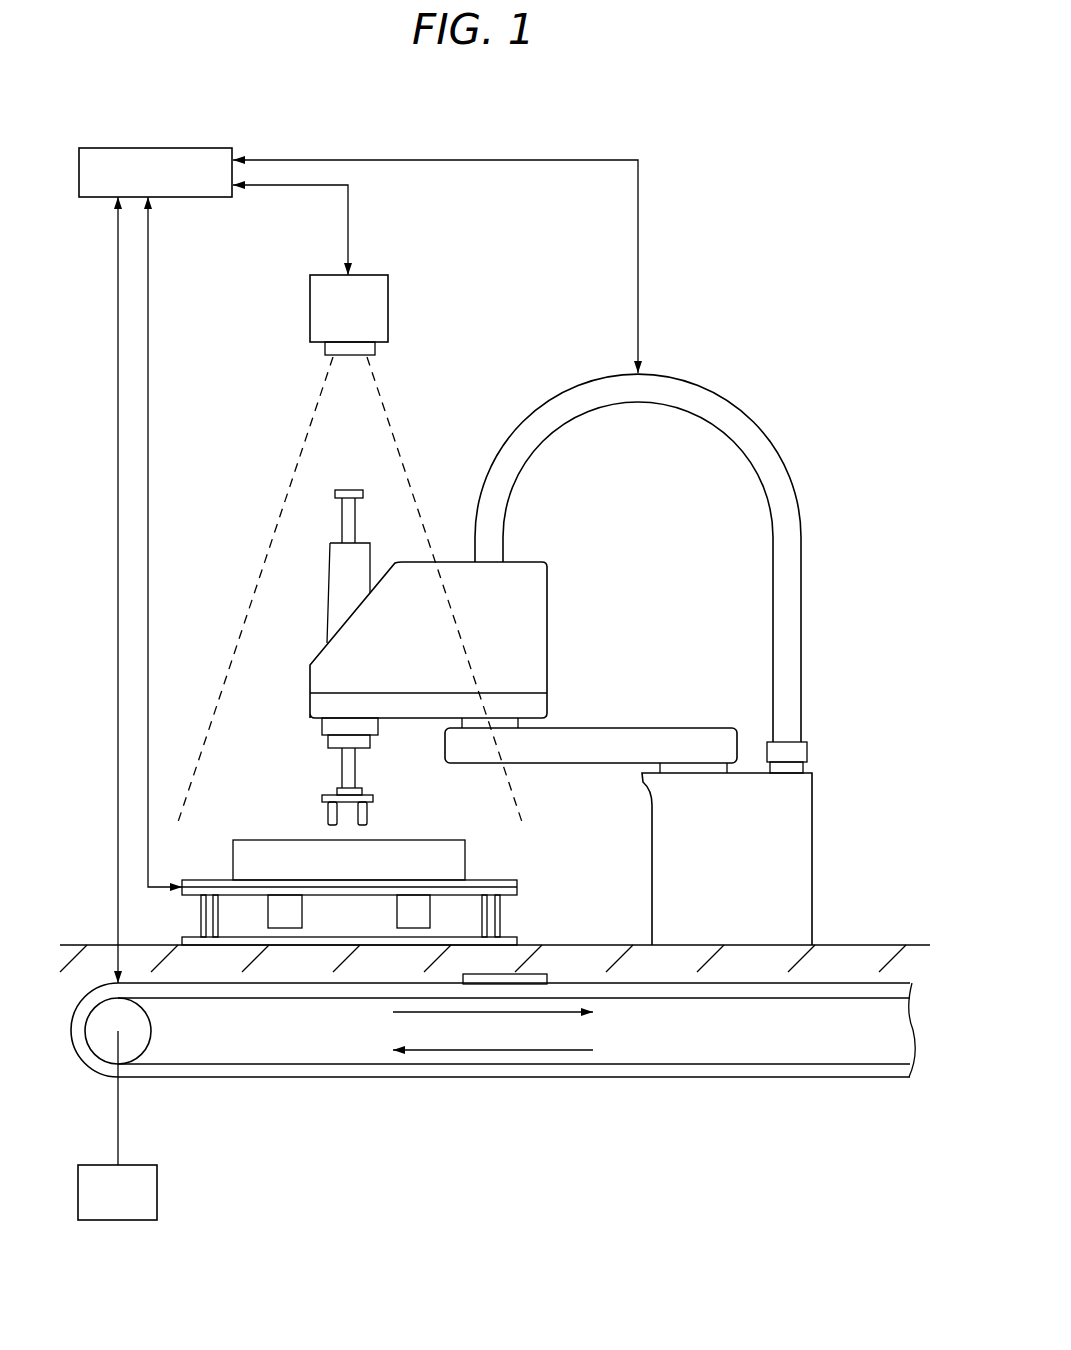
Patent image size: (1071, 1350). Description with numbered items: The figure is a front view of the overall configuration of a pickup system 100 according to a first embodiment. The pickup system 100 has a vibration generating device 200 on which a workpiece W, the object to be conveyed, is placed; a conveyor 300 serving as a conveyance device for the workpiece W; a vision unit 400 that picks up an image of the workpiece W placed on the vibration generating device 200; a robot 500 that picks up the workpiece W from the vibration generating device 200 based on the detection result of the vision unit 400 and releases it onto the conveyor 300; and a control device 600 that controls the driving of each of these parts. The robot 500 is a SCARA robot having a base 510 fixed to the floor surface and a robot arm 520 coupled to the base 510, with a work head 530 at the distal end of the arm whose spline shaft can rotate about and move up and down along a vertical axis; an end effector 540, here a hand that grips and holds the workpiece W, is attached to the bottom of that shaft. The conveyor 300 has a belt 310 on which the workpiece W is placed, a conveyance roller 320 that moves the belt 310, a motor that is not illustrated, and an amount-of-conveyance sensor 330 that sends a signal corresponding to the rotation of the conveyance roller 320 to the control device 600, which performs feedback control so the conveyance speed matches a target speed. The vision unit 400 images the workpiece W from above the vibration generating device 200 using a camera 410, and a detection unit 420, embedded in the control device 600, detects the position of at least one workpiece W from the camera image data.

The pickup system 100 is at (843, 200).
The vibration generating device 200 is at (258, 838).
The conveyor 300 is at (567, 1080).
The belt 310 is at (433, 990).
The conveyance roller 320 is at (100, 1035).
The amount-of-conveyance sensor 330 is at (120, 1205).
The vision unit 400 is at (392, 307).
The camera 410 is at (310, 312).
The detection unit 420 is at (138, 167).
The robot 500 is at (757, 422).
The base 510 is at (795, 868).
The robot arm 520 is at (562, 766).
The work head 530 is at (327, 582).
The end effector 540 is at (377, 813).
The control device 600 is at (200, 146).
The workpiece W is at (349, 862).